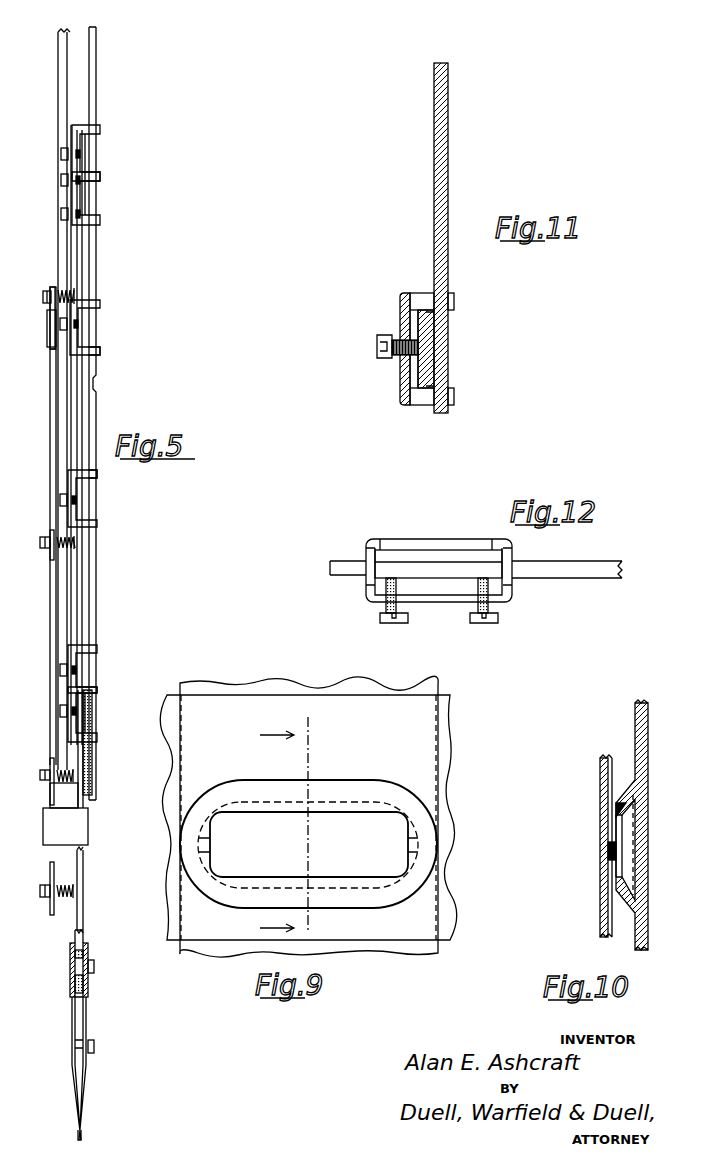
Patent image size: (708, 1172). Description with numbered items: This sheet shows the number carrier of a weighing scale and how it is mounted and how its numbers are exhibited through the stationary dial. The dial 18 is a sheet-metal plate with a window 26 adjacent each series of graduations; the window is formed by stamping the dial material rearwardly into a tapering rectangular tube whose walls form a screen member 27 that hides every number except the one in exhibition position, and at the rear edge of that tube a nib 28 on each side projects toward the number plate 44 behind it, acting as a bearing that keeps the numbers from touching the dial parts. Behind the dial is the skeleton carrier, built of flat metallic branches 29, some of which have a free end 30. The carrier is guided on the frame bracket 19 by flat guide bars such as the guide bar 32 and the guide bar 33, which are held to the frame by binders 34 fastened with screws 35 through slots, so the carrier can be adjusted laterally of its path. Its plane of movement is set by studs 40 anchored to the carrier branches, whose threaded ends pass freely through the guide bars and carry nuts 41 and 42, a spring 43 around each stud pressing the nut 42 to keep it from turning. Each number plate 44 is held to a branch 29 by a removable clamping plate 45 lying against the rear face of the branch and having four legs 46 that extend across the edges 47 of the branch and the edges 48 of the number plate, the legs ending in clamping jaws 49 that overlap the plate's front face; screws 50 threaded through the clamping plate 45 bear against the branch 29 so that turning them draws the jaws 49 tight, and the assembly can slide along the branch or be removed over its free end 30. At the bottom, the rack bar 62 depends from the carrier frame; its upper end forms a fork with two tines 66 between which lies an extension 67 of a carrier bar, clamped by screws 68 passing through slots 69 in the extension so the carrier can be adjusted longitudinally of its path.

In FIG. 9, the dial 18 is at (308, 817).
In FIG. 10, the dial 18 is at (641, 703).
In FIG. 5, the frame bracket 19 is at (62, 241).
In FIG. 9, the window 26 is at (382, 814).
In FIG. 10, the window 26 is at (622, 870).
In FIG. 9, the screen member 27 is at (340, 797).
In FIG. 10, the screen member 27 is at (620, 808).
In FIG. 9, the nib 28 is at (231, 848).
In FIG. 10, the nib 28 is at (610, 850).
In FIG. 5, the branch 29 is at (83, 428).
In FIG. 11, the branch 29 is at (443, 349).
In FIG. 12, the branch 29 is at (573, 568).
In FIG. 5, the free end 30 is at (85, 162).
In FIG. 12, the free end 30 is at (330, 568).
In FIG. 5, the guide bar 32 is at (53, 437).
In FIG. 5, the guide bar 33 is at (50, 806).
In FIG. 5, the binder 34 is at (47, 340).
In FIG. 5, the screw 35 is at (50, 322).
In FIG. 5, the stud 40 is at (45, 292).
In FIG. 5, the nut 41 is at (48, 301).
In FIG. 5, the nut 42 is at (66, 290).
In FIG. 5, the spring 43 is at (72, 292).
In FIG. 5, the number plate 44 is at (93, 98).
In FIG. 11, the number plate 44 is at (437, 149).
In FIG. 12, the number plate 44 is at (443, 556).
In FIG. 9, the number plate 44 is at (322, 690).
In FIG. 10, the number plate 44 is at (602, 763).
In FIG. 5, the clamping plate 45 is at (75, 143).
In FIG. 11, the clamping plate 45 is at (403, 380).
In FIG. 12, the clamping plate 45 is at (440, 602).
In FIG. 11, the leg 46 is at (419, 295).
In FIG. 12, the leg 46 is at (370, 586).
In FIG. 11, the edge of branch 47 is at (430, 316).
In FIG. 12, the edge of number plate 48 is at (366, 552).
In FIG. 5, the clamping jaw 49 is at (92, 352).
In FIG. 11, the clamping jaw 49 is at (453, 300).
In FIG. 12, the clamping jaw 49 is at (380, 545).
In FIG. 5, the screw 50 is at (61, 179).
In FIG. 11, the screw 50 is at (378, 348).
In FIG. 12, the screw 50 is at (393, 623).
In FIG. 5, the rack bar 62 is at (81, 1120).
In FIG. 5, the tine 66 is at (74, 1020).
In FIG. 5, the extension 67 is at (78, 1005).
In FIG. 5, the screw 68 is at (94, 966).
In FIG. 5, the slot 69 is at (75, 978).